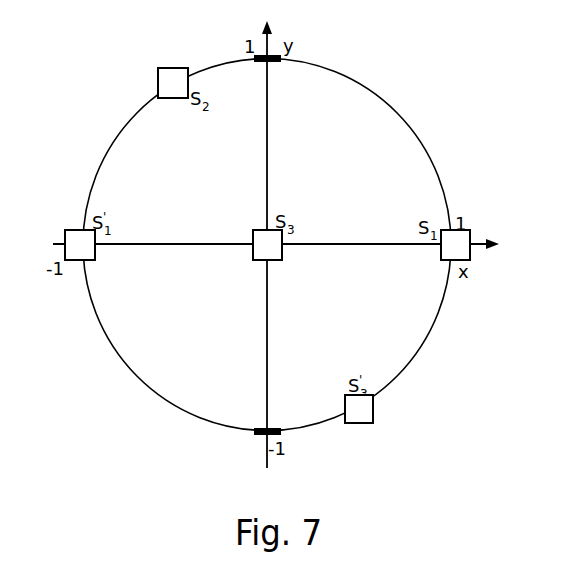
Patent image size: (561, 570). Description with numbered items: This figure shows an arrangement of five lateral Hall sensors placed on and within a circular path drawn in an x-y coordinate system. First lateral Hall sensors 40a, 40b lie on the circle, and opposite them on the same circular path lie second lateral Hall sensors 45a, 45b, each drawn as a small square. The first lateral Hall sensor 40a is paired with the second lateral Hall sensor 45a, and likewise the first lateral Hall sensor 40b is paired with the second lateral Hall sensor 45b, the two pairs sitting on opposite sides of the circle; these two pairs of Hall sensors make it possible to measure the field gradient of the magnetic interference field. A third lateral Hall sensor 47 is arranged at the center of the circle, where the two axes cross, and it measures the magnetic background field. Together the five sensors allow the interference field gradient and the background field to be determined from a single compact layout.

The first lateral Hall sensor 40a is at (175, 72).
The second output port / signal point S1 40b is at (489, 245).
The second lateral Hall sensor 45a is at (375, 419).
The second input port / signal point S1' 45b is at (55, 245).
The third lateral Hall sensor 47 is at (277, 257).